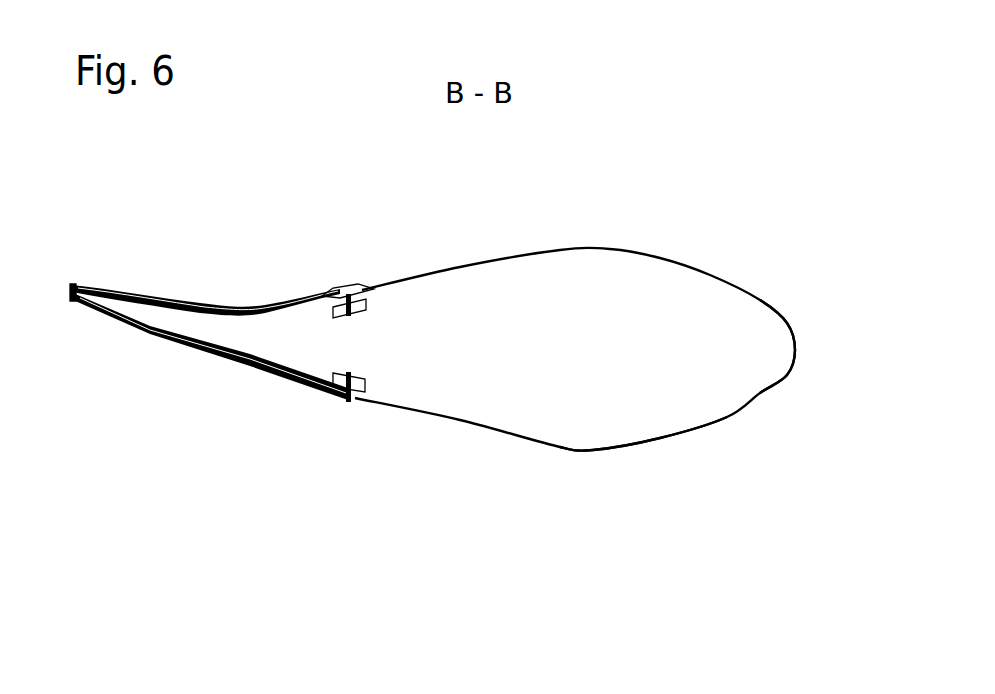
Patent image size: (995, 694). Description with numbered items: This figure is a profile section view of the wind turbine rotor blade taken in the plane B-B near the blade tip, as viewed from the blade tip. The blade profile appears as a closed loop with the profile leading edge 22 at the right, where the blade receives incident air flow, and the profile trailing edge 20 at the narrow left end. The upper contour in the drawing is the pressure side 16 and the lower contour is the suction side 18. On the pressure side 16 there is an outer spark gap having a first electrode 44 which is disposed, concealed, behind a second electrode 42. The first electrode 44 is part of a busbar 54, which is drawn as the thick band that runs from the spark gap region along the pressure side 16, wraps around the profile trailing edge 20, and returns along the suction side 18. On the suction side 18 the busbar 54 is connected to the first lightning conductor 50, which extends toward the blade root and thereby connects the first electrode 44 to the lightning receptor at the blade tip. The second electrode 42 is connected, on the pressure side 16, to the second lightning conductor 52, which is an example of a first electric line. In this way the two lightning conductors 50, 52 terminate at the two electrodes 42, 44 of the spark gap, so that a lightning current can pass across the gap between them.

The pressure side 16 is at (592, 247).
The suction side 18 is at (649, 452).
The profile trailing edge 20 is at (70, 302).
The profile leading edge 22 is at (787, 318).
The second electrode 42 is at (352, 288).
The first electrode 44 is at (364, 346).
The first lightning conductor 50 is at (363, 394).
The second lightning conductor 52 is at (362, 308).
The busbar 54 is at (228, 298).